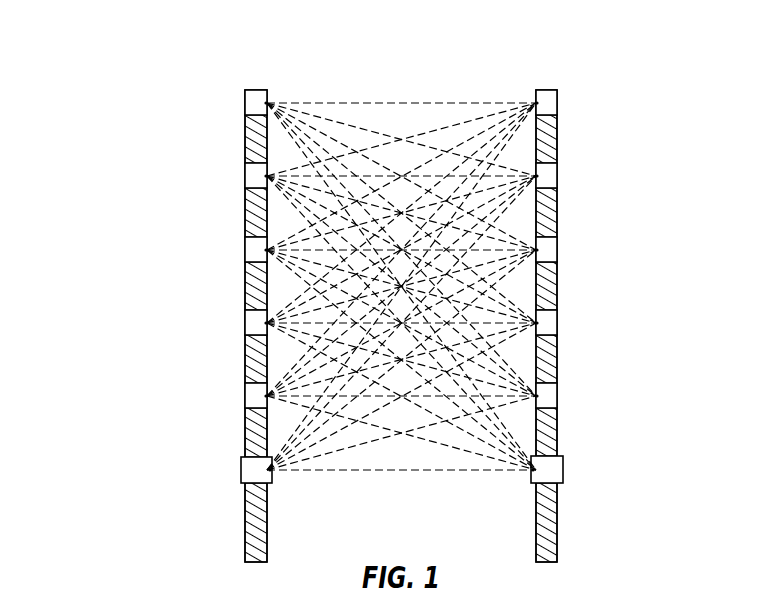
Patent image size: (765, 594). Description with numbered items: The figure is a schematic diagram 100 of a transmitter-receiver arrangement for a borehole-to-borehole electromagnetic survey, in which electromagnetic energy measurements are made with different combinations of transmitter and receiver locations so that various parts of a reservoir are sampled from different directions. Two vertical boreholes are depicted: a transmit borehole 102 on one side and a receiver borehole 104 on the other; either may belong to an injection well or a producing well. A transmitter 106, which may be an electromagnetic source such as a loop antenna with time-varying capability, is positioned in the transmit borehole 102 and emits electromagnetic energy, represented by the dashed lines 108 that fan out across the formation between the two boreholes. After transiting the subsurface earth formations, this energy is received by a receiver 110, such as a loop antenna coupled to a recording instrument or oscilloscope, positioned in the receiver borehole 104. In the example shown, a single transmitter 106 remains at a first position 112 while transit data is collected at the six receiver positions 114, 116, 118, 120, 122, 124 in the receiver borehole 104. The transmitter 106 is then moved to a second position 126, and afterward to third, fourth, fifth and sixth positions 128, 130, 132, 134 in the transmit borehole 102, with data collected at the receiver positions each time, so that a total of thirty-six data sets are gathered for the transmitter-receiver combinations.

The schematic diagram 100 is at (121, 46).
The transmit borehole 102 is at (251, 86).
The receiver borehole 104 is at (551, 83).
The transmitter 106 is at (241, 478).
The lines representing EM energy 108 is at (464, 92).
The receiver 110 is at (563, 478).
The transmitter position 112 is at (237, 467).
The receiver position 114 is at (567, 467).
The receiver position 116 is at (562, 396).
The receiver position 118 is at (562, 324).
The receiver position 120 is at (562, 251).
The receiver position 122 is at (562, 177).
The receiver position 124 is at (562, 104).
The second transmitter position 126 is at (241, 396).
The third transmitter position 128 is at (241, 324).
The fourth transmitter position 130 is at (241, 251).
The fifth transmitter position 132 is at (241, 177).
The sixth transmitter position 134 is at (241, 104).